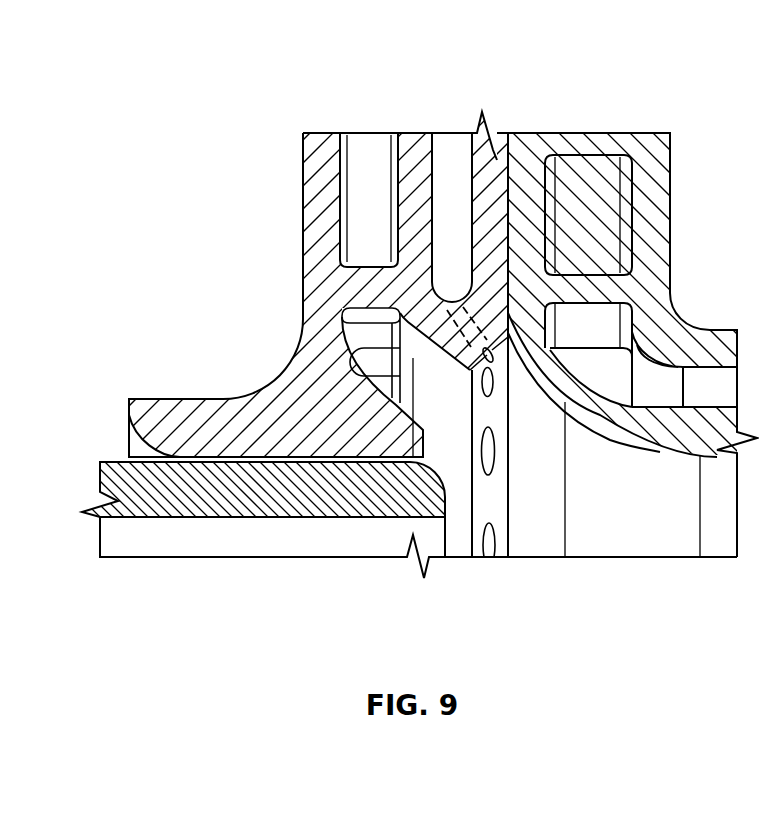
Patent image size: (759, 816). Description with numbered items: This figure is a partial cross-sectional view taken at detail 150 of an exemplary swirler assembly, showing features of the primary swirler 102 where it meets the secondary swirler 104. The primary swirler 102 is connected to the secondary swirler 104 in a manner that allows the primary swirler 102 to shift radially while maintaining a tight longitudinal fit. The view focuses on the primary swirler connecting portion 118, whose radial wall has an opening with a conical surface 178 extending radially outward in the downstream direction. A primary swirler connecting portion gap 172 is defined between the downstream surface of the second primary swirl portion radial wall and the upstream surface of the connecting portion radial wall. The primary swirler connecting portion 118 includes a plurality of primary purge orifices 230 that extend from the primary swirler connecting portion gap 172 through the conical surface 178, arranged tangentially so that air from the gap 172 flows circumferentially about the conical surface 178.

The detail 150 is at (297, 90).
The primary swirler 102 is at (291, 294).
The secondary swirler 104 is at (666, 118).
The primary swirler connecting portion 118 is at (498, 160).
The primary swirler connecting portion gap 172 is at (444, 175).
The conical surface 178 is at (489, 413).
The primary purge orifices 230 is at (463, 322).